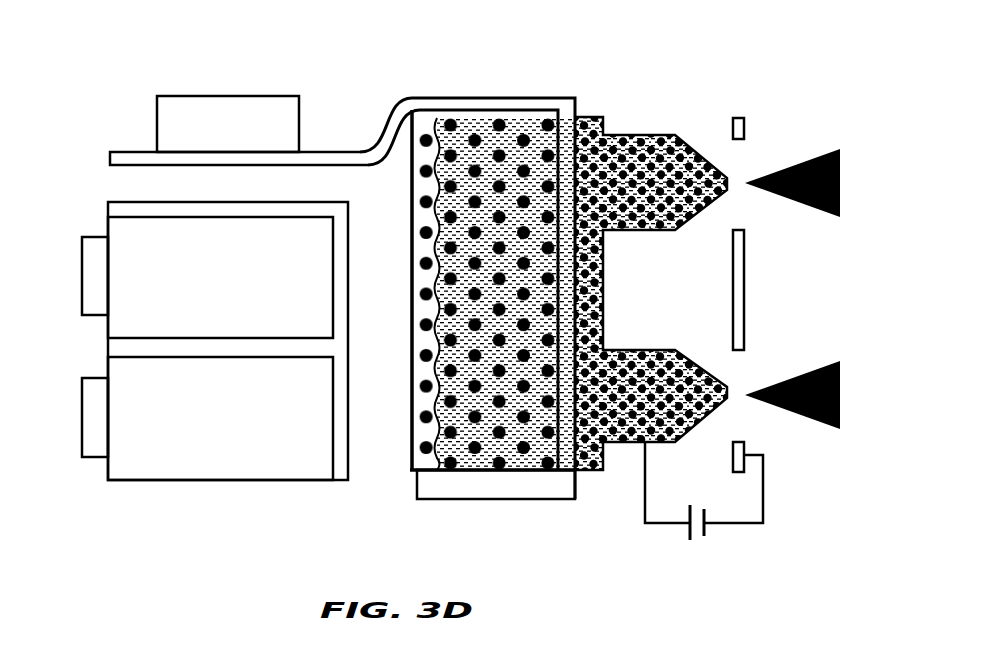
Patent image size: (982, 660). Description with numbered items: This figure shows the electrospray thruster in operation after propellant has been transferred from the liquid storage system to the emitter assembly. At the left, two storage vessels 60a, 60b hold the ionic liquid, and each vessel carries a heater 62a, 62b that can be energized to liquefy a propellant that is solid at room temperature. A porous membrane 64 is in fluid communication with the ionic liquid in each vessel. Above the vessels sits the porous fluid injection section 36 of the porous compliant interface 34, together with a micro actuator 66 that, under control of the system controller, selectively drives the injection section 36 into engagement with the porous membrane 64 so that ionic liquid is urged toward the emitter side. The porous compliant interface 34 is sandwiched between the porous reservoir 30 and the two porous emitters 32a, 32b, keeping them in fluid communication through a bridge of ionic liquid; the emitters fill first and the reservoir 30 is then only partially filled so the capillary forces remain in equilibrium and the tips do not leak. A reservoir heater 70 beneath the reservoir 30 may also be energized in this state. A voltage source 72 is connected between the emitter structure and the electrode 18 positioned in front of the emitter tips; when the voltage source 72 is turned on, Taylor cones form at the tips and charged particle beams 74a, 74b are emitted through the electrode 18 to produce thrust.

The electrode 18 is at (742, 288).
The porous reservoir 30 is at (437, 153).
The porous emitter 32a is at (697, 148).
The porous emitter 32b is at (697, 365).
The porous compliant interface 34 is at (458, 103).
The fluid injection section 36 is at (128, 152).
The storage vessel 60a is at (150, 247).
The storage vessel 60b is at (142, 455).
The heater 62a is at (92, 277).
The heater 62b is at (92, 415).
The porous membrane 64 is at (128, 208).
The micro actuator 66 is at (188, 108).
The reservoir heater 70 is at (529, 487).
The voltage source 72 is at (698, 540).
The charged particle beam 74a is at (798, 162).
The charged particle beam 74b is at (808, 422).